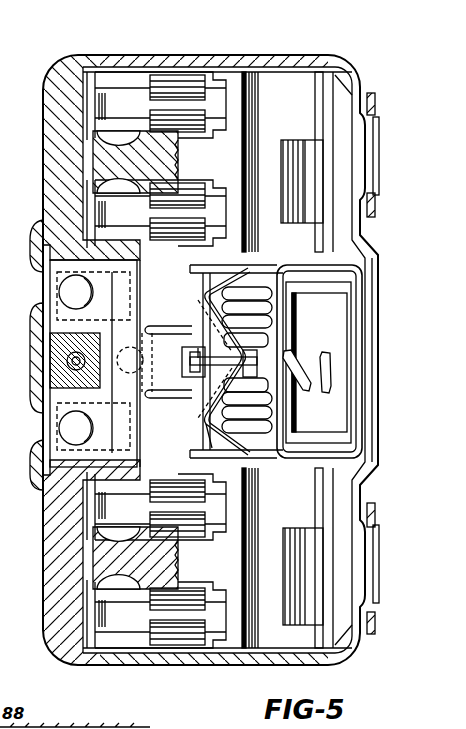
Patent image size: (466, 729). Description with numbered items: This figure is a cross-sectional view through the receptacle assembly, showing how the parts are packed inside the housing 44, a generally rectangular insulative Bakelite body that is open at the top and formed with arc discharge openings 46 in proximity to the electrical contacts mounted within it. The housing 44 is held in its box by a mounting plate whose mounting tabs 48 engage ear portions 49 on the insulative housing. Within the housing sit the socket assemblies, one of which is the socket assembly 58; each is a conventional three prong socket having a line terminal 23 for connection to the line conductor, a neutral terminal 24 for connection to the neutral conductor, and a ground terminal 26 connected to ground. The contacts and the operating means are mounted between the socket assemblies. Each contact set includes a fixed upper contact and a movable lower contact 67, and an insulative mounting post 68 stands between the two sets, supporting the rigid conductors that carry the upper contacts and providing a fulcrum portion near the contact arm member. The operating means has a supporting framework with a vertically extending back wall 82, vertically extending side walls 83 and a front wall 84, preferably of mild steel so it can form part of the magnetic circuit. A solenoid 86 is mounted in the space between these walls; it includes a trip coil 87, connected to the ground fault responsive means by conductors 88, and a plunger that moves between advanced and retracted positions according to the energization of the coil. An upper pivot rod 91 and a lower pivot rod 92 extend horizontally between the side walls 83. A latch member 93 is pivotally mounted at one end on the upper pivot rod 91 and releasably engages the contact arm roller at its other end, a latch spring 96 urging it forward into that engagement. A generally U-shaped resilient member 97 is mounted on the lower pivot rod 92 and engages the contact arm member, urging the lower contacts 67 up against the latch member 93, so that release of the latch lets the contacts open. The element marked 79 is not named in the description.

The line terminal 23 is at (173, 100).
The neutral terminal 24 is at (177, 213).
The ground terminal 26 is at (271, 163).
The housing 44 is at (43, 552).
The arc discharge openings 46 is at (40, 296).
The mounting tabs 48 is at (377, 210).
The ear portions 49 is at (375, 156).
The socket assembly 58 is at (250, 70).
The movable lower contact 67 is at (60, 285).
The insulative mounting post 68 is at (57, 351).
The plunger 79 is at (176, 380).
The back wall 82 is at (356, 398).
The side walls 83 is at (298, 246).
The front wall 84 is at (282, 416).
The solenoid 86 is at (340, 337).
The trip coil 87 is at (325, 352).
The conductors 88 is at (328, 373).
The upper pivot rod 91 is at (208, 446).
The lower pivot rod 92 is at (258, 447).
The latch member 93 is at (198, 358).
The latch spring 96 is at (202, 303).
The U-shaped resilient member 97 is at (145, 397).